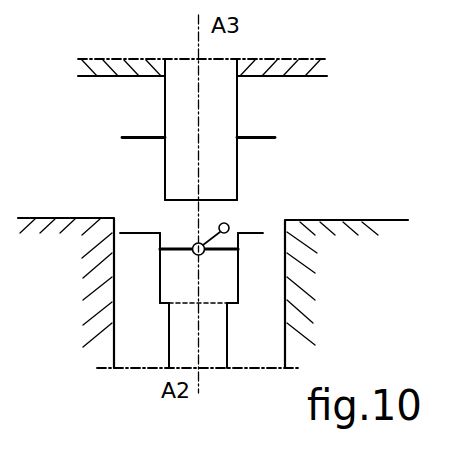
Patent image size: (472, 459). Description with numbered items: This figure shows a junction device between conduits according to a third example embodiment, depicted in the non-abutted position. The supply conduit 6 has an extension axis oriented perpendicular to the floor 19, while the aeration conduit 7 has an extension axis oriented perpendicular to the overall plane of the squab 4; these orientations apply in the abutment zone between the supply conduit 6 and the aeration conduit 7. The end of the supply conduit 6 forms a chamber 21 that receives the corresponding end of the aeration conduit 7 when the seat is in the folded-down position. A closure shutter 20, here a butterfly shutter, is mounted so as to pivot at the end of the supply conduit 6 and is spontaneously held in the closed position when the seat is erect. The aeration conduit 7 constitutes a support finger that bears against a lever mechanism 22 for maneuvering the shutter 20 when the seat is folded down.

The squab 4 is at (307, 77).
The supply conduit 6 is at (227, 340).
The aeration conduit 7 is at (165, 108).
The floor 19 is at (362, 220).
The closure shutter 20 is at (186, 249).
The chamber 21 is at (160, 281).
The lever mechanism 22 is at (229, 225).